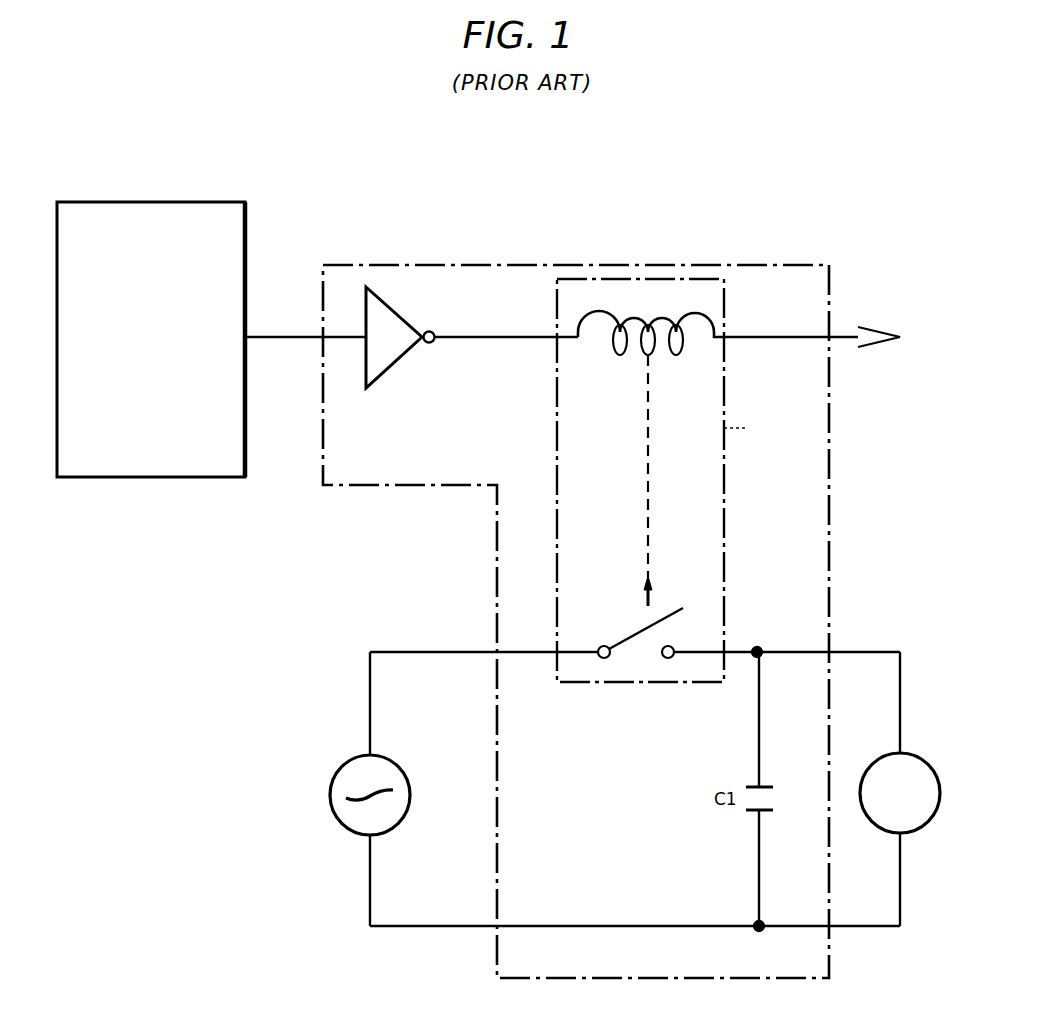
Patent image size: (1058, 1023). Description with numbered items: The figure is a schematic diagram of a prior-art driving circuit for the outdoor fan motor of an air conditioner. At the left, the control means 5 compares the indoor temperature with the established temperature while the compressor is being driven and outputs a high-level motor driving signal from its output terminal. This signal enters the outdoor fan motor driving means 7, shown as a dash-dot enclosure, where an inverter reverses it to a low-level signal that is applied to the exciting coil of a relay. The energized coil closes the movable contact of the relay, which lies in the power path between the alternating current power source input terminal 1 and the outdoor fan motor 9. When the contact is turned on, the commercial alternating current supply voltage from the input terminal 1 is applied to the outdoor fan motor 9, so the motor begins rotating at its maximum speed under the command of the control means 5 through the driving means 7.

The alternating current power source input terminal 1 is at (331, 782).
The control means 5 is at (247, 217).
The outdoor fan motor driving means 7 is at (829, 265).
The outdoor fan motor 9 is at (921, 830).